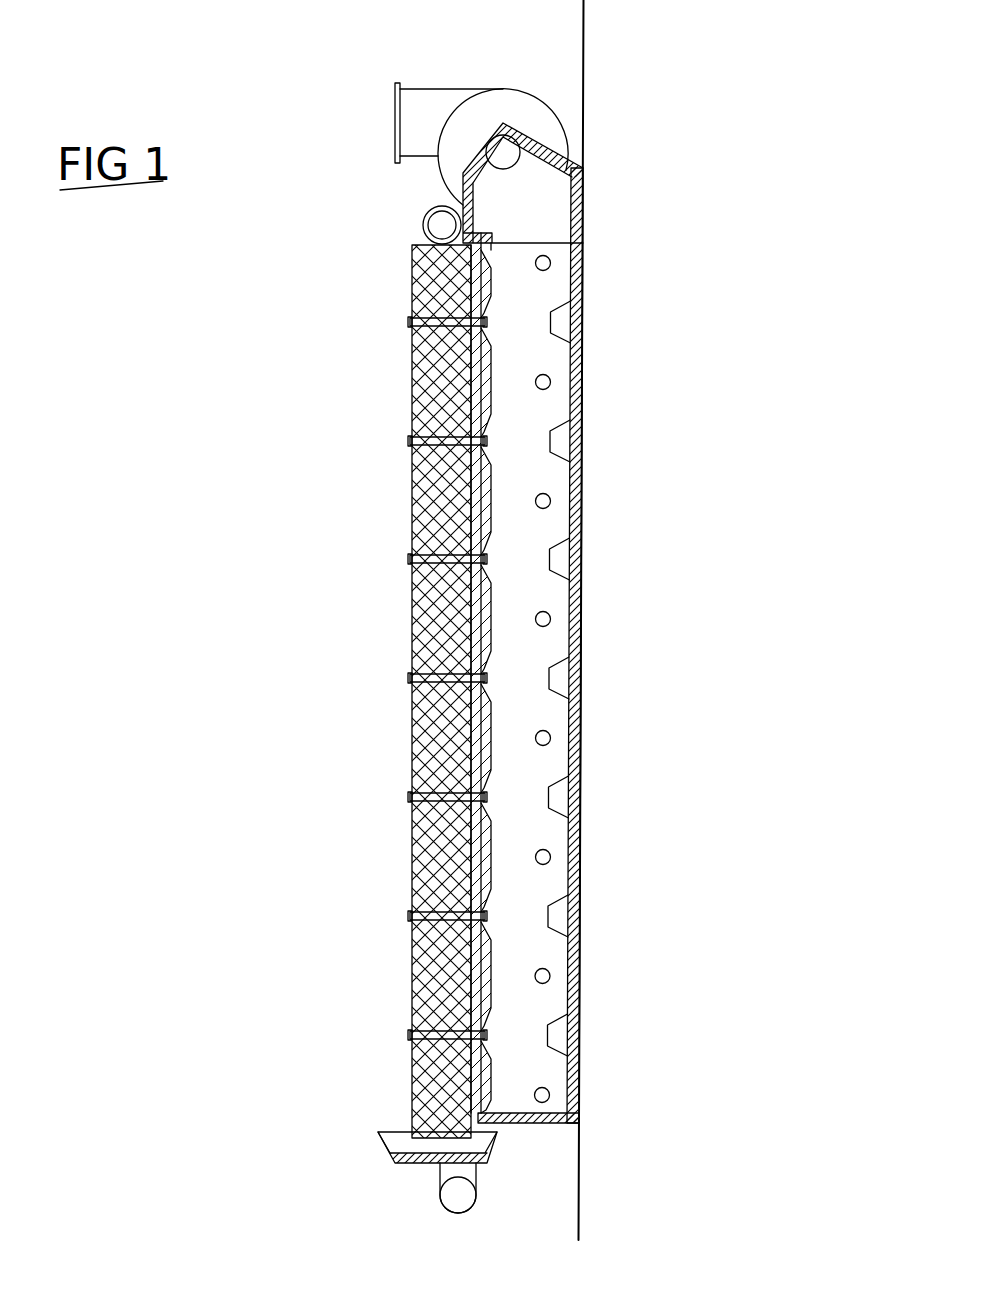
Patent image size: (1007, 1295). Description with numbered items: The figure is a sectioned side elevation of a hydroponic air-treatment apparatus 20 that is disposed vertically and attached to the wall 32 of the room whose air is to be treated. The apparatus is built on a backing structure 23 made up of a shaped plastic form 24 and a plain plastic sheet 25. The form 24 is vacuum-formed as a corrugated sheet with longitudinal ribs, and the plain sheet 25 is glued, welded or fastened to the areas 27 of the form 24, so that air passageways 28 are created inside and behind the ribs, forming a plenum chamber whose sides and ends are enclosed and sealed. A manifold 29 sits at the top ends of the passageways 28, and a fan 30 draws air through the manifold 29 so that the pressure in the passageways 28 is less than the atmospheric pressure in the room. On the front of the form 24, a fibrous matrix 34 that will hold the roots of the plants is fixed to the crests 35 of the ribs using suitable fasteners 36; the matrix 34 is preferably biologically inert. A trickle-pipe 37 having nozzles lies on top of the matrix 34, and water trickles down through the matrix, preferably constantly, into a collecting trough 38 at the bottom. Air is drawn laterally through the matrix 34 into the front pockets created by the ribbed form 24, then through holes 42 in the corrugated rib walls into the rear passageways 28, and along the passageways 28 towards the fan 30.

The apparatus 20 is at (257, 925).
The backing structure 23 is at (507, 547).
The shaped plastic form 24 is at (515, 930).
The plain plastic sheet 25 is at (578, 617).
The areas of the form 27 is at (568, 402).
The air passageways 28 is at (517, 792).
The manifold 29 is at (542, 212).
The fan 30 is at (538, 132).
The wall 32 is at (583, 22).
The fibrous matrix 34 is at (437, 478).
The crests 35 is at (468, 660).
The fasteners 36 is at (425, 683).
The trickle-pipe 37 is at (433, 230).
The collecting trough 38 is at (403, 1147).
The holes 42 is at (551, 858).